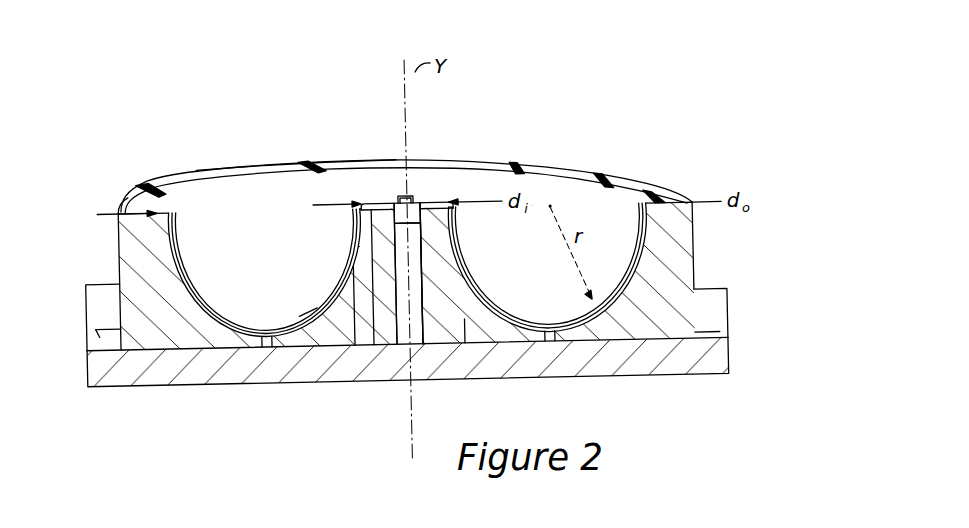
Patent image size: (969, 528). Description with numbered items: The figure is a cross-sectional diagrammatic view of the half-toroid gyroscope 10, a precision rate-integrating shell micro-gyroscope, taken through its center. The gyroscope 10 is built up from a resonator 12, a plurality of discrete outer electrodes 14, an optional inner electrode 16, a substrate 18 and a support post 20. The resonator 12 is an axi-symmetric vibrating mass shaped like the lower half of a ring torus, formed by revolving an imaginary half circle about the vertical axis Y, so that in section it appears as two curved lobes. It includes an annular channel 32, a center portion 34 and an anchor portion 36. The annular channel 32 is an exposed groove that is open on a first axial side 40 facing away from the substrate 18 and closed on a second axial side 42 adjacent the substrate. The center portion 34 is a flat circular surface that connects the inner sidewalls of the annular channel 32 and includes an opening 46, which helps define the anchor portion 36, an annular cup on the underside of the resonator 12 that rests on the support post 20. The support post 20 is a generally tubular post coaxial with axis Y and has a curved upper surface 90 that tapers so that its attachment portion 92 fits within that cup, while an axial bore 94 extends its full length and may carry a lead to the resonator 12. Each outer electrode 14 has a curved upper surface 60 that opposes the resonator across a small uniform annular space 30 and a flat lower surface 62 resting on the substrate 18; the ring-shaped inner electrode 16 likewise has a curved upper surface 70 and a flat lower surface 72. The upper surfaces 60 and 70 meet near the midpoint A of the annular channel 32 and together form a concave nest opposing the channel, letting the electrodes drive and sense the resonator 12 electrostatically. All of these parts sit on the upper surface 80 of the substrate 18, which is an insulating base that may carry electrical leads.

The gyroscope 10 is at (662, 45).
The resonator 12 is at (184, 205).
The outer electrodes 14 is at (185, 165).
The inner electrode 16 is at (313, 338).
The substrate 18 is at (657, 358).
The support post 20 is at (452, 328).
The annular space 30 is at (647, 206).
The annular channel 32 is at (273, 192).
The center portion 34 is at (381, 198).
The anchor portion 36 is at (424, 214).
The first axial side 40 is at (598, 143).
The second axial side 42 is at (600, 323).
The opening 46 is at (410, 196).
The upper surface 60 is at (209, 317).
The lower surface 62 is at (206, 320).
The upper surface 70 is at (338, 295).
The lower surface 72 is at (341, 347).
The upper surface 80 is at (91, 349).
The curved upper surface 90 is at (451, 244).
The attachment portion 92 is at (438, 213).
The axial bore 94 is at (420, 328).
The midpoint A is at (263, 333).